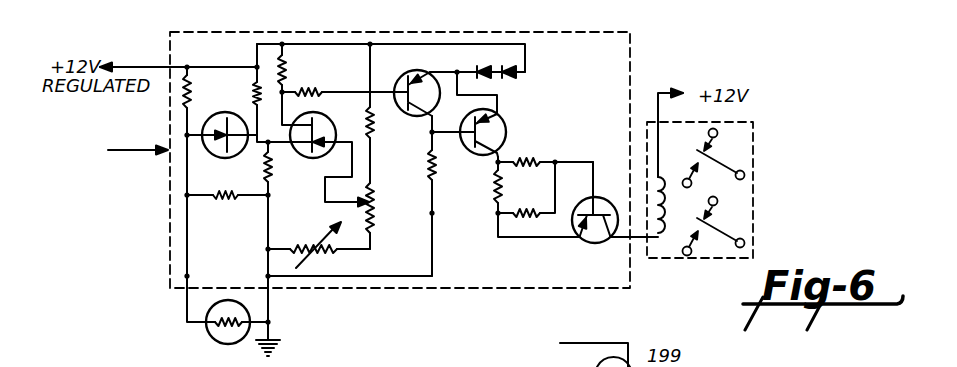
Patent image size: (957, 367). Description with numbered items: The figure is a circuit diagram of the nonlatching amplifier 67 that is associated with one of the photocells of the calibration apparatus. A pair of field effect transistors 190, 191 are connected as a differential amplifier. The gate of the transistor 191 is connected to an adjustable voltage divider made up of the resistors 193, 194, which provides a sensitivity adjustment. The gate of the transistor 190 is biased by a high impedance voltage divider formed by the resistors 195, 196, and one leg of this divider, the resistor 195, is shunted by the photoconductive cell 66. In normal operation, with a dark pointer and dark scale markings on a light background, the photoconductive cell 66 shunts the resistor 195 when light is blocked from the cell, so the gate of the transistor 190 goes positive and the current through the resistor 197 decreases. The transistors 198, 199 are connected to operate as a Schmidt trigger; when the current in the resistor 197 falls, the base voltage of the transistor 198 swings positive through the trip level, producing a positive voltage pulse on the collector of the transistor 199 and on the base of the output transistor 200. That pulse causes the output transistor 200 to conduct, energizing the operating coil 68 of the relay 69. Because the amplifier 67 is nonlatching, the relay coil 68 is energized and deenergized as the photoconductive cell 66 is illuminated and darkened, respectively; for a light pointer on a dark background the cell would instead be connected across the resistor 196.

The photoconductive cell 66 is at (212, 336).
The amplifier 67 is at (138, 142).
The operating coil 68 is at (658, 233).
The relay 69 is at (810, 148).
The field effect transistor 190 is at (225, 112).
The field effect transistor 191 is at (331, 150).
The resistor 193 is at (380, 222).
The resistor 194 is at (307, 240).
The resistor 195 is at (236, 206).
The resistor 196 is at (178, 104).
The resistor 197 is at (288, 64).
The transistor 198 is at (410, 117).
The transistor 199 is at (505, 127).
The output transistor 200 is at (597, 244).